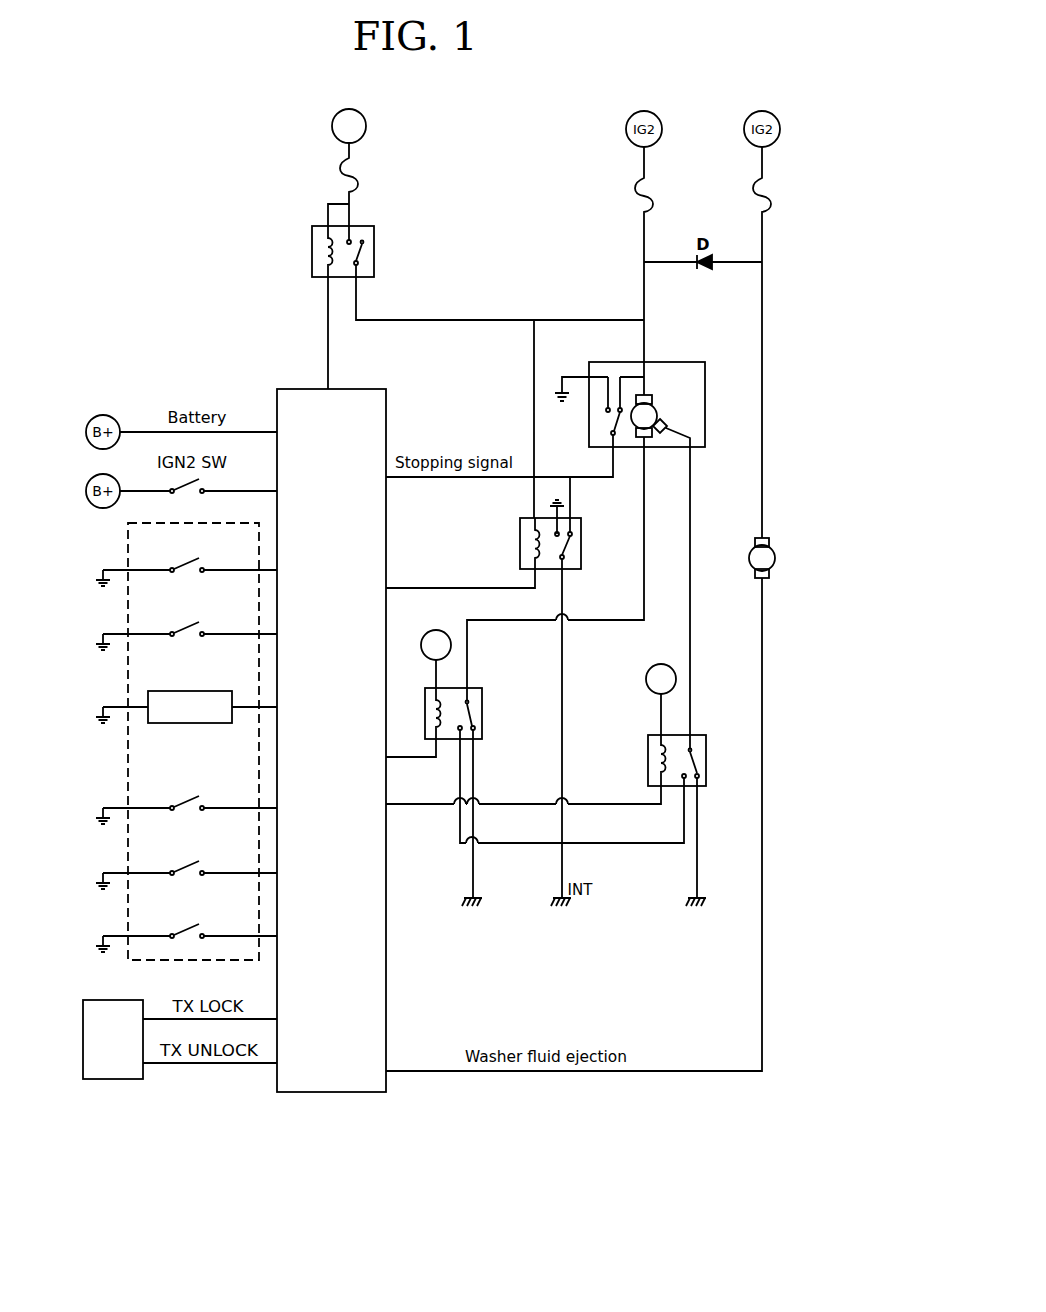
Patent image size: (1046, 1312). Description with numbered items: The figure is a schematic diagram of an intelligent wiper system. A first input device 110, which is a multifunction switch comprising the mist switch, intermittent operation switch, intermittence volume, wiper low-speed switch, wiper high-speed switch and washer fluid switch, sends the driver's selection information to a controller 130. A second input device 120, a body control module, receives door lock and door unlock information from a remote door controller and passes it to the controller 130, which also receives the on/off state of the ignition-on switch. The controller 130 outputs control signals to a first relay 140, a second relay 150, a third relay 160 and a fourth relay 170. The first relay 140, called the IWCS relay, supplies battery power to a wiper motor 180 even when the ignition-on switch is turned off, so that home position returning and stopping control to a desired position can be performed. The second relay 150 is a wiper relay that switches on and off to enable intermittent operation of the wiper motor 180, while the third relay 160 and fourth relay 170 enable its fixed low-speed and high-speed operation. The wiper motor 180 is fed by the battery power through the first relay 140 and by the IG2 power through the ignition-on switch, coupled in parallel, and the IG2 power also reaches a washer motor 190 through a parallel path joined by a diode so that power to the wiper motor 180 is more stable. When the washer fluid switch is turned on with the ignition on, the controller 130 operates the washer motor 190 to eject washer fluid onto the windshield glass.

The first input device 110 is at (128, 768).
The second input device 120 is at (113, 1080).
The controller 130 is at (330, 1092).
The first relay 140 is at (312, 252).
The second relay 150 is at (520, 547).
The third relay 160 is at (482, 716).
The fourth relay 170 is at (705, 737).
The wiper motor 180 is at (676, 362).
The washer motor 190 is at (750, 548).